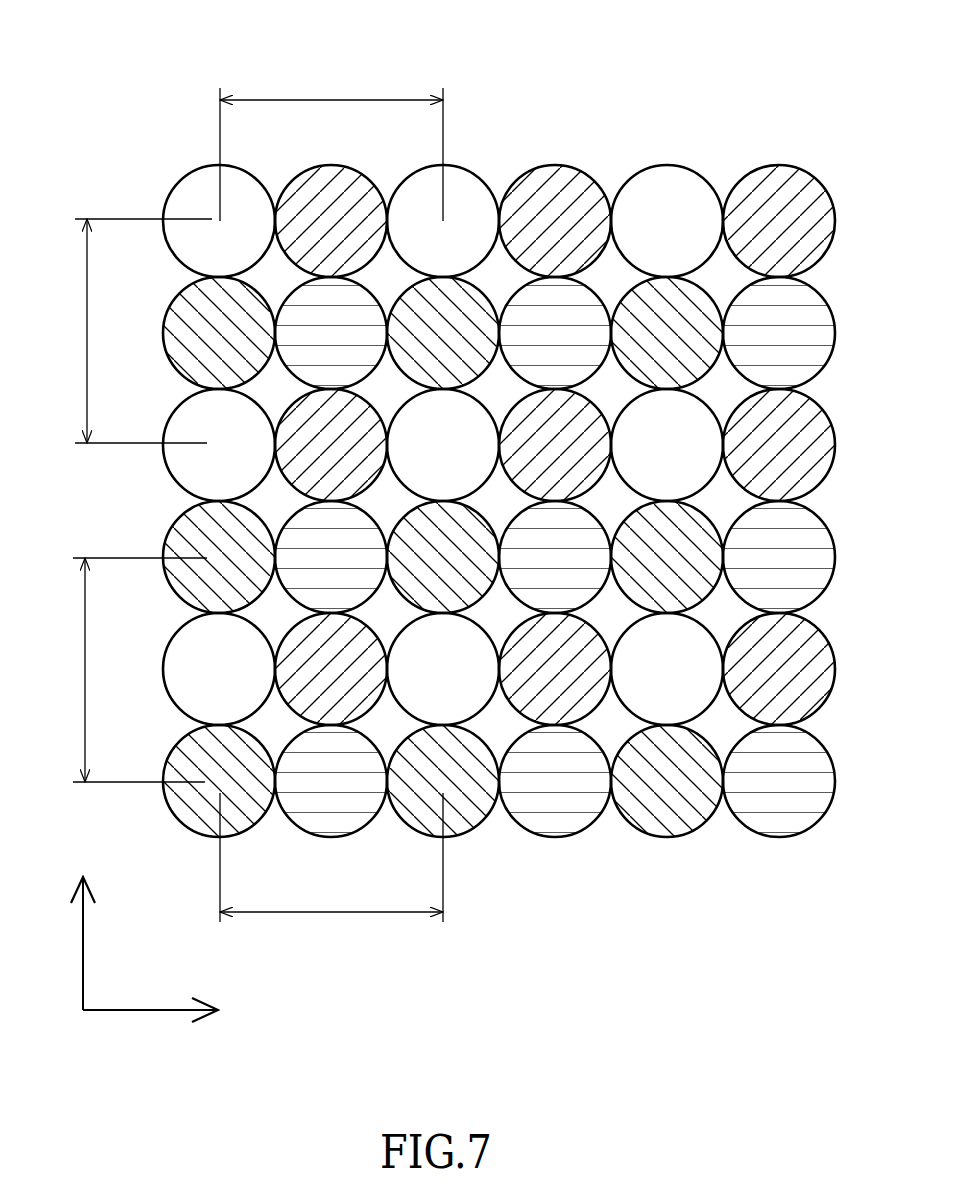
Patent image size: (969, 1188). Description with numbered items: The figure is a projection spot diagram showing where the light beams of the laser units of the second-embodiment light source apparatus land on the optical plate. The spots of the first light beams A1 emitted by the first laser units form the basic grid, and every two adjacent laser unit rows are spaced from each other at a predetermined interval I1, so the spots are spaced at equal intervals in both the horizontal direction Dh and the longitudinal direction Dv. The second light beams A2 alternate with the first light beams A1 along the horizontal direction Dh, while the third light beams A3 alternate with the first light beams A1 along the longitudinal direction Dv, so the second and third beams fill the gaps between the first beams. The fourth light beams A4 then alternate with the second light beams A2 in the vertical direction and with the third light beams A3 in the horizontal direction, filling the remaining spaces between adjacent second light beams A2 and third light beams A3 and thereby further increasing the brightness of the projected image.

The first light beam A1 is at (212, 200).
The second light beam A2 is at (547, 200).
The third light beam A3 is at (195, 530).
The fourth light beam A4 is at (570, 315).
The predetermined interval I1 is at (248, 491).
The longitudinal direction Dv is at (87, 929).
The horizontal direction Dh is at (168, 1009).